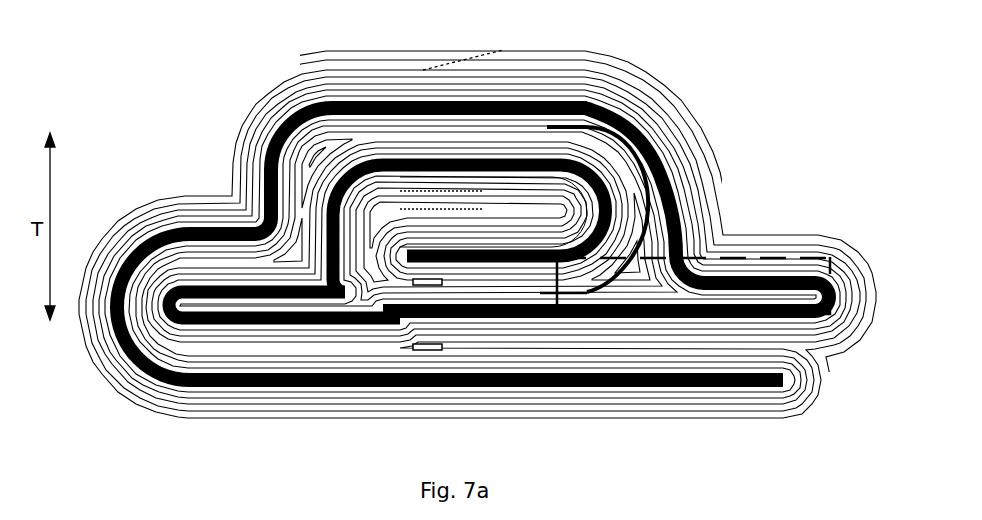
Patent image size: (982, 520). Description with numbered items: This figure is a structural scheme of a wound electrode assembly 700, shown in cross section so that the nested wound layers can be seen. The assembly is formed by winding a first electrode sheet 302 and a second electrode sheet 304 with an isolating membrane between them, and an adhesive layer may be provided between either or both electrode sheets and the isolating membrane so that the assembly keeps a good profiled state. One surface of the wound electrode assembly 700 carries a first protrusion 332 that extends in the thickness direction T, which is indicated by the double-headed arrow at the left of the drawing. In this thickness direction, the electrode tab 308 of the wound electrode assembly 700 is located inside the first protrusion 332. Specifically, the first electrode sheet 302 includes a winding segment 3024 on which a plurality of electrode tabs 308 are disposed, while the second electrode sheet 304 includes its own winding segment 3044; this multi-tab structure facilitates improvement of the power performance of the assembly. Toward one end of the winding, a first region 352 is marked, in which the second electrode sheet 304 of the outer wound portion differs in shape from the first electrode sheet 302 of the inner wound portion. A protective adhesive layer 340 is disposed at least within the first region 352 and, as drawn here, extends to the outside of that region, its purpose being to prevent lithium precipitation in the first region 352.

The wound electrode assembly 700 is at (207, 62).
The first protrusion 332 is at (237, 153).
The electrode tab 308 is at (420, 346).
The winding segment 3044 is at (573, 160).
The first electrode sheet 302 is at (642, 193).
The second electrode sheet 304 is at (655, 235).
The winding segment 3024 is at (674, 248).
The protective adhesive layer 340 is at (597, 288).
The first region 352 is at (832, 312).